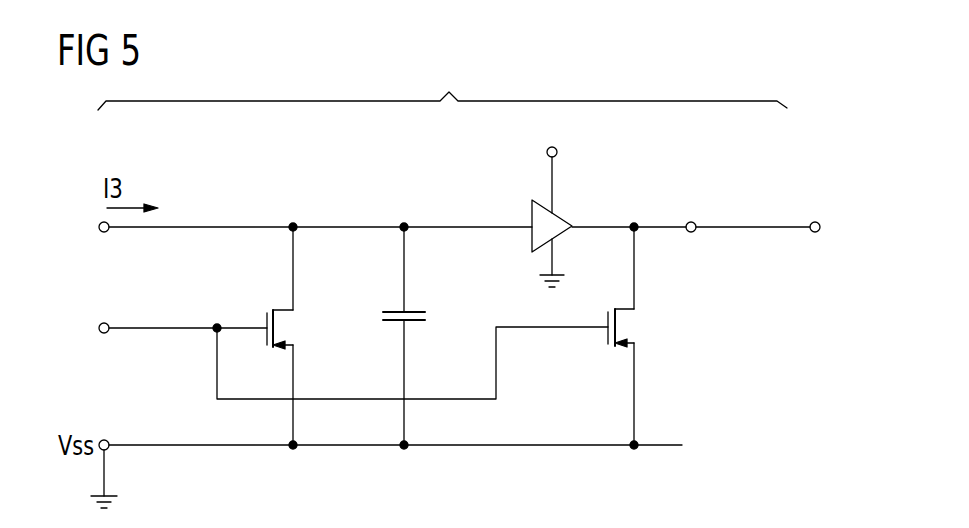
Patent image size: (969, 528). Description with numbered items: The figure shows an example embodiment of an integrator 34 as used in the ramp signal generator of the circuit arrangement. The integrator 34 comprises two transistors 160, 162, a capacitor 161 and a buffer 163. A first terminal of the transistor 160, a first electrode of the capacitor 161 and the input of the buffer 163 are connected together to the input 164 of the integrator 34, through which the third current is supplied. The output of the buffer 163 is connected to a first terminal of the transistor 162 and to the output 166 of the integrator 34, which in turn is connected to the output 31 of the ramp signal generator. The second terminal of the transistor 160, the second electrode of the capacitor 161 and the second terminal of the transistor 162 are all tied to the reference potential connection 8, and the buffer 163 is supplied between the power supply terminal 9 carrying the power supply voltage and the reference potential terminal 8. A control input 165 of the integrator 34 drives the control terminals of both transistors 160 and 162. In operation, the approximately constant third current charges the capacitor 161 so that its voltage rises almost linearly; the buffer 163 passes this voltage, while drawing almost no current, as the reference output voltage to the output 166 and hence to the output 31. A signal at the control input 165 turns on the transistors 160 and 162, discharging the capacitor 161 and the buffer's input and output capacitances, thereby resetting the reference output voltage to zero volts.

The integrator 34 is at (442, 84).
The power supply terminal 9 is at (547, 153).
The reference potential connection 8 is at (565, 278).
The buffer 163 is at (532, 233).
The input 164 is at (104, 232).
The control input 165 is at (104, 333).
The output 166 is at (691, 232).
The output of the ramp signal generator 31 is at (815, 232).
The transistor 160 is at (275, 330).
The capacitor 161 is at (427, 314).
The transistor 162 is at (619, 330).